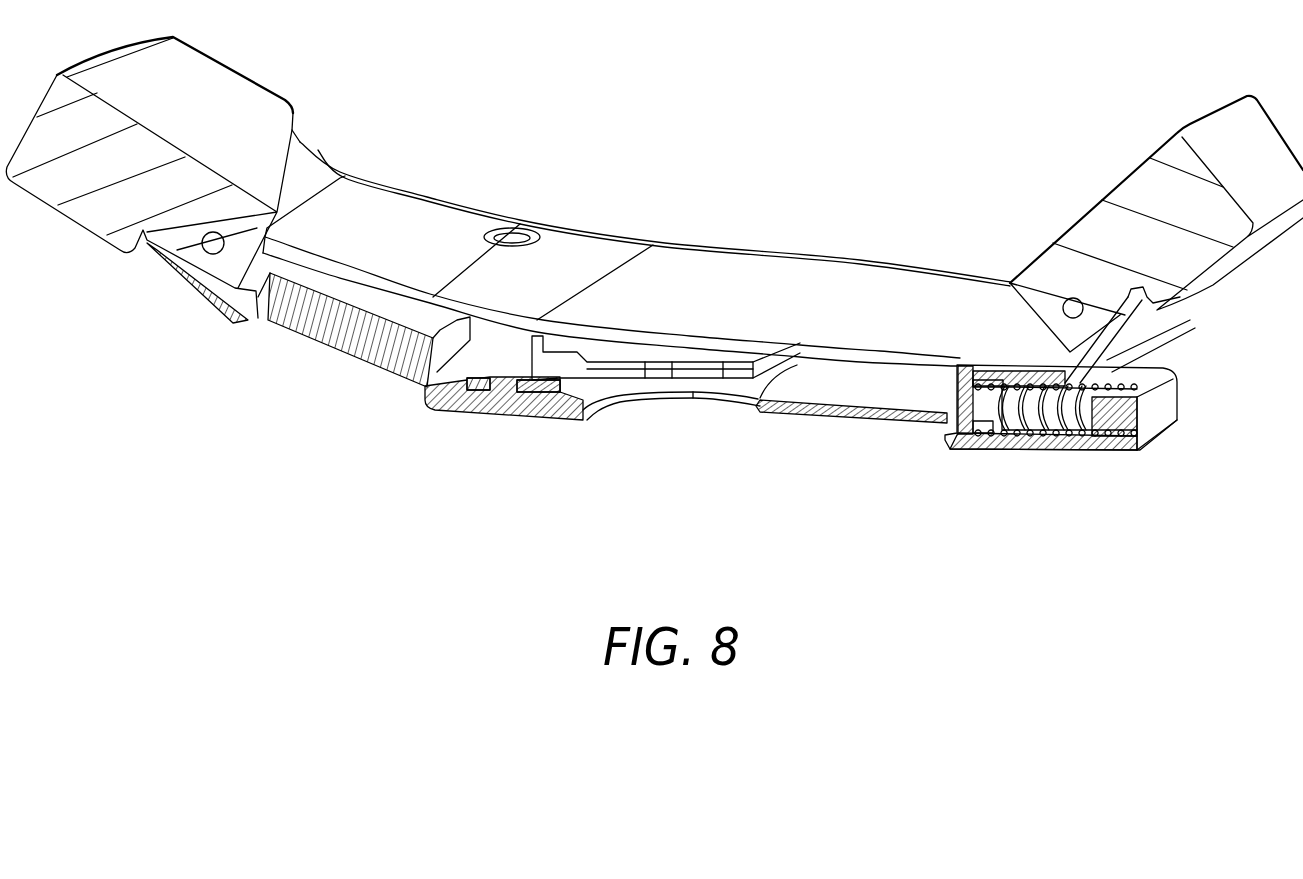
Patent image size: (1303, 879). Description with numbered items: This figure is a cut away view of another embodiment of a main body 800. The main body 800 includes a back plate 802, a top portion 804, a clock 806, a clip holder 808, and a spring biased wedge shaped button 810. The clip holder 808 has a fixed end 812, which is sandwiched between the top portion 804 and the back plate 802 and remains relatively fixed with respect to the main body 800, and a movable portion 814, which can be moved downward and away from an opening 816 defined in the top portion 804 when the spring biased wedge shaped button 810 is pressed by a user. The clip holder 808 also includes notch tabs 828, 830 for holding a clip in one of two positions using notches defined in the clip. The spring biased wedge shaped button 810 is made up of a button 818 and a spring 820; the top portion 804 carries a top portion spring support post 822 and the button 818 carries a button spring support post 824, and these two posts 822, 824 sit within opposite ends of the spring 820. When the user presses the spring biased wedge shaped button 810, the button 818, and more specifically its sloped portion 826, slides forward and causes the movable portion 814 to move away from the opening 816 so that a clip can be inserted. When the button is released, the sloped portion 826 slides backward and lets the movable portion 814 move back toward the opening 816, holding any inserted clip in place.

The main body 800 is at (645, 150).
The back plate 802 is at (390, 228).
The top portion 804 is at (473, 420).
The clock 806 is at (331, 350).
The clip holder 808 is at (607, 420).
The spring biased wedge shaped button 810 is at (1168, 433).
The fixed end 812 is at (481, 384).
The movable portion 814 is at (852, 387).
The opening 816 is at (703, 417).
The button 818 is at (1167, 397).
The spring 820 is at (1067, 413).
The top portion spring support post 822 is at (987, 407).
The button spring support post 824 is at (1120, 420).
The sloped portion 826 is at (947, 420).
The notch tab 828 is at (668, 363).
The notch tab 830 is at (740, 378).